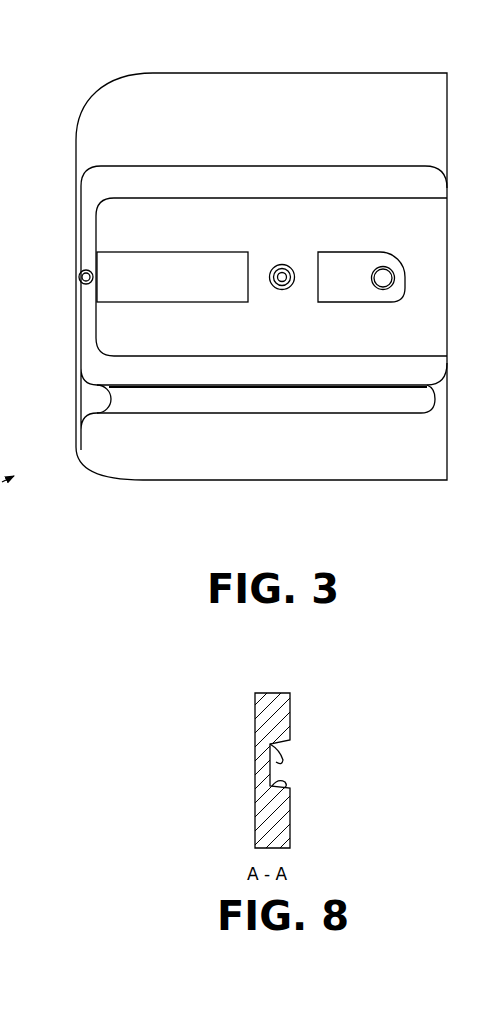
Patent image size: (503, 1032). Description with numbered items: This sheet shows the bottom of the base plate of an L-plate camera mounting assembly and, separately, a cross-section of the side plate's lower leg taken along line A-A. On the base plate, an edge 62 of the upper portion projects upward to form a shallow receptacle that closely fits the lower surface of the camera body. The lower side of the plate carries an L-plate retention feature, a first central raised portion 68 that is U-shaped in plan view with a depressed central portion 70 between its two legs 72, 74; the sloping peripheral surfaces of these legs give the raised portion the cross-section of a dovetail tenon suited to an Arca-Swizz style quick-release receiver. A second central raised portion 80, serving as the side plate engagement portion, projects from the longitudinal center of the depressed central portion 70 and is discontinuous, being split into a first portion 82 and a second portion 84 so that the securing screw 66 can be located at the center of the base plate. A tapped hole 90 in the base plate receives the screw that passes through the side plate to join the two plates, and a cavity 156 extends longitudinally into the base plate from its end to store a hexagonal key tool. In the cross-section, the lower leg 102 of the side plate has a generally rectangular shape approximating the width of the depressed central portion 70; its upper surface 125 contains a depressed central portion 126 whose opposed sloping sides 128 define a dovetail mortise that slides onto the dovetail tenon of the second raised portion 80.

In FIG. 3, the edge 62 is at (248, 73).
In FIG. 3, the first central raised portion 68 is at (232, 278).
In FIG. 3, the leg 72 is at (270, 165).
In FIG. 3, the depressed central portion 70 is at (288, 334).
In FIG. 3, the first portion 82 is at (143, 252).
In FIG. 3, the screw 66 is at (288, 263).
In FIG. 3, the second central raised portion 80 is at (404, 278).
In FIG. 3, the second portion 84 is at (357, 252).
In FIG. 3, the tapped hole 90 is at (393, 283).
In FIG. 3, the leg 74 is at (220, 414).
In FIG. 3, the cavity 156 is at (100, 400).
In FIG. 8, the lower leg 102 is at (313, 788).
In FIG. 8, the upper surface 125 is at (290, 820).
In FIG. 8, the depressed central portion 126 is at (324, 765).
In FIG. 8, the sloping sides 128 is at (288, 758).